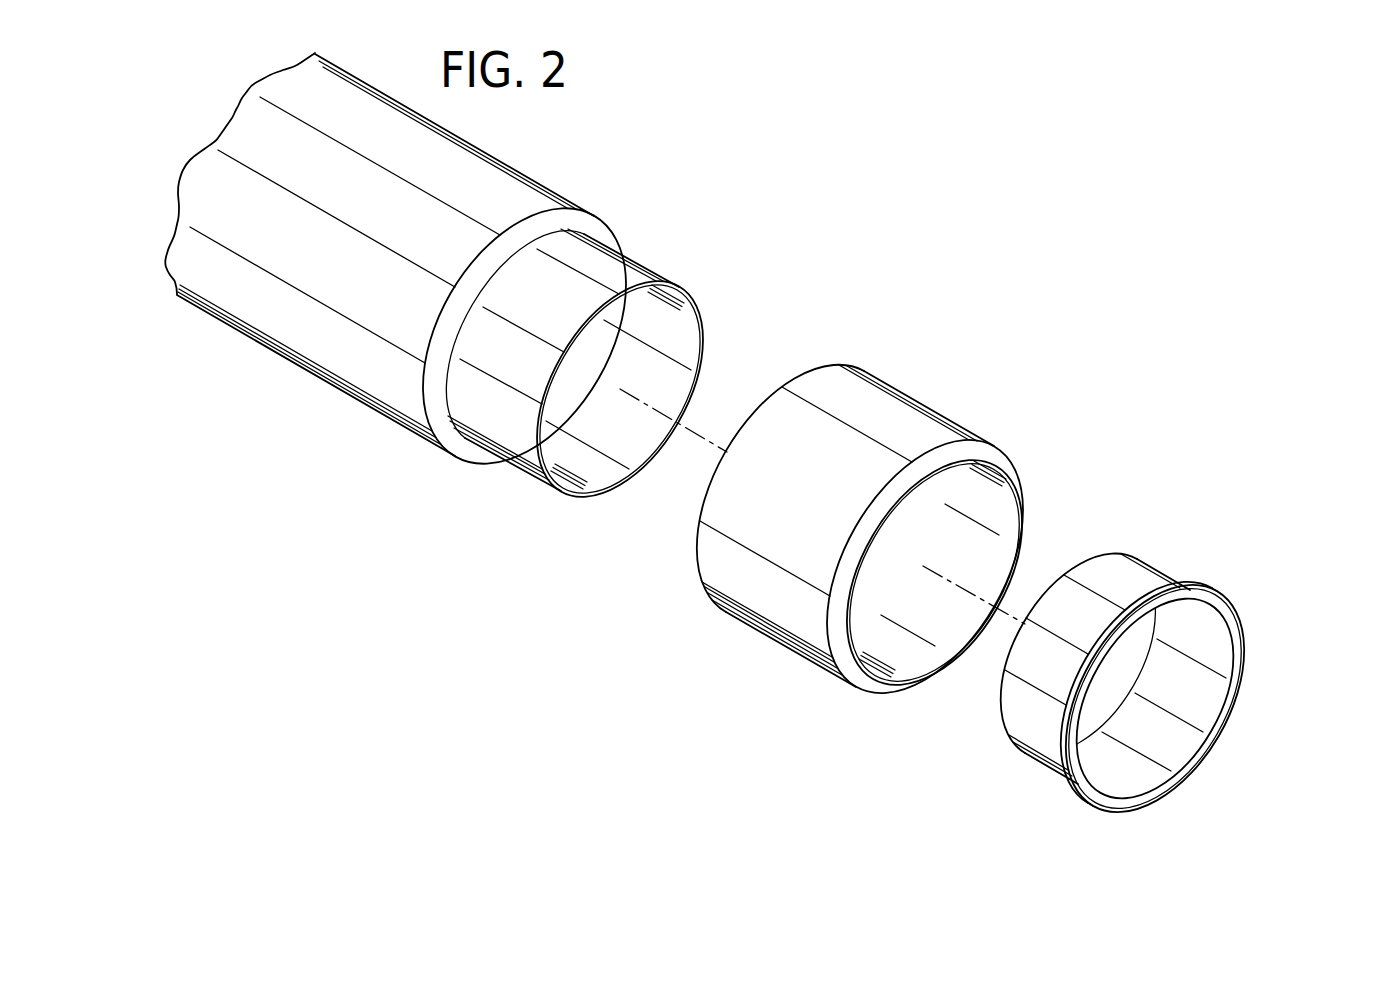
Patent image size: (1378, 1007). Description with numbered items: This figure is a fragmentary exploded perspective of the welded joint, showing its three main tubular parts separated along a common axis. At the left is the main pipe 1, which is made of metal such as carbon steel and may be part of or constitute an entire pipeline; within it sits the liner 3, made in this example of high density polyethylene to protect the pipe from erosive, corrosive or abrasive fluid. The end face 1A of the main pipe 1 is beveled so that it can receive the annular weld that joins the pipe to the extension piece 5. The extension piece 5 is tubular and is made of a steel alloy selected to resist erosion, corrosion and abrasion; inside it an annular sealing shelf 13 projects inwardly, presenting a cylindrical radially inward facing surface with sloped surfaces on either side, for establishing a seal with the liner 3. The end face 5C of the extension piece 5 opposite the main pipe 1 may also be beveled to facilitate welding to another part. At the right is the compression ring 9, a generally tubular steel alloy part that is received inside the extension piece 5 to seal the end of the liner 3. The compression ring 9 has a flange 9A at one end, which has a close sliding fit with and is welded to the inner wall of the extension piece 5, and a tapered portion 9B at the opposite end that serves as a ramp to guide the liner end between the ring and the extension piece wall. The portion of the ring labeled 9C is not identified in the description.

The main pipe 1 is at (546, 138).
The end face of the main pipe 1A is at (617, 247).
The liner 3 is at (666, 254).
The extension piece 5 is at (733, 651).
The end face of the extension piece 5C is at (998, 460).
The annular sealing shelf 13 is at (880, 567).
The compression ring 9 is at (1033, 796).
The flange 9A is at (1248, 610).
The tapered portion 9B is at (1118, 557).
The cylindrical body of ring 9C is at (1043, 717).